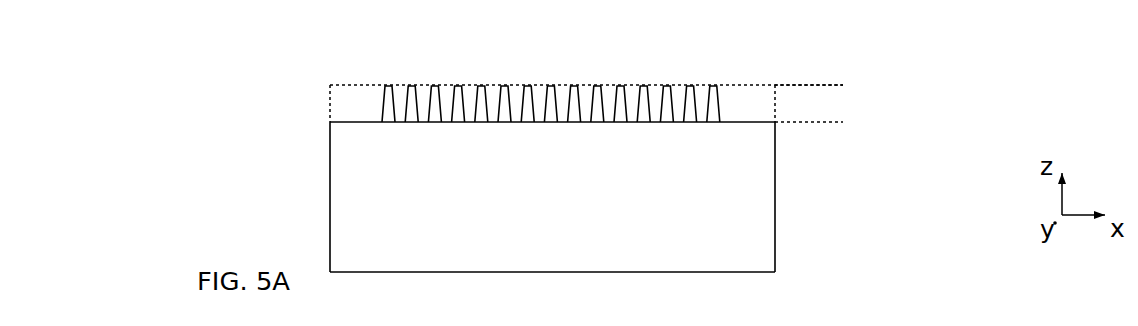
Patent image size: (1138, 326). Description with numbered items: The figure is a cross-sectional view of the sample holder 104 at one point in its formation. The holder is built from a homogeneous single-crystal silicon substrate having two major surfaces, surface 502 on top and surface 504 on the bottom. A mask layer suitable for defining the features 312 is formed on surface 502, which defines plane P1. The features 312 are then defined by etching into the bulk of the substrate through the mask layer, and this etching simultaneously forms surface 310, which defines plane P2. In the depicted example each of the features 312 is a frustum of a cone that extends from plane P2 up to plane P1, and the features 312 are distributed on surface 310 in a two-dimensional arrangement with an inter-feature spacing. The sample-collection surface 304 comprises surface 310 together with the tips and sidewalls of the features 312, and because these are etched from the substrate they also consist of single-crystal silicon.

The sample holder 104 is at (544, 170).
The sample-collection surface 304 is at (580, 88).
The features 312 is at (388, 103).
The surface 310 is at (750, 125).
The major surface 502 is at (753, 85).
The major surface 504 is at (758, 275).
The plane P1 is at (828, 87).
The plane P2 is at (827, 123).